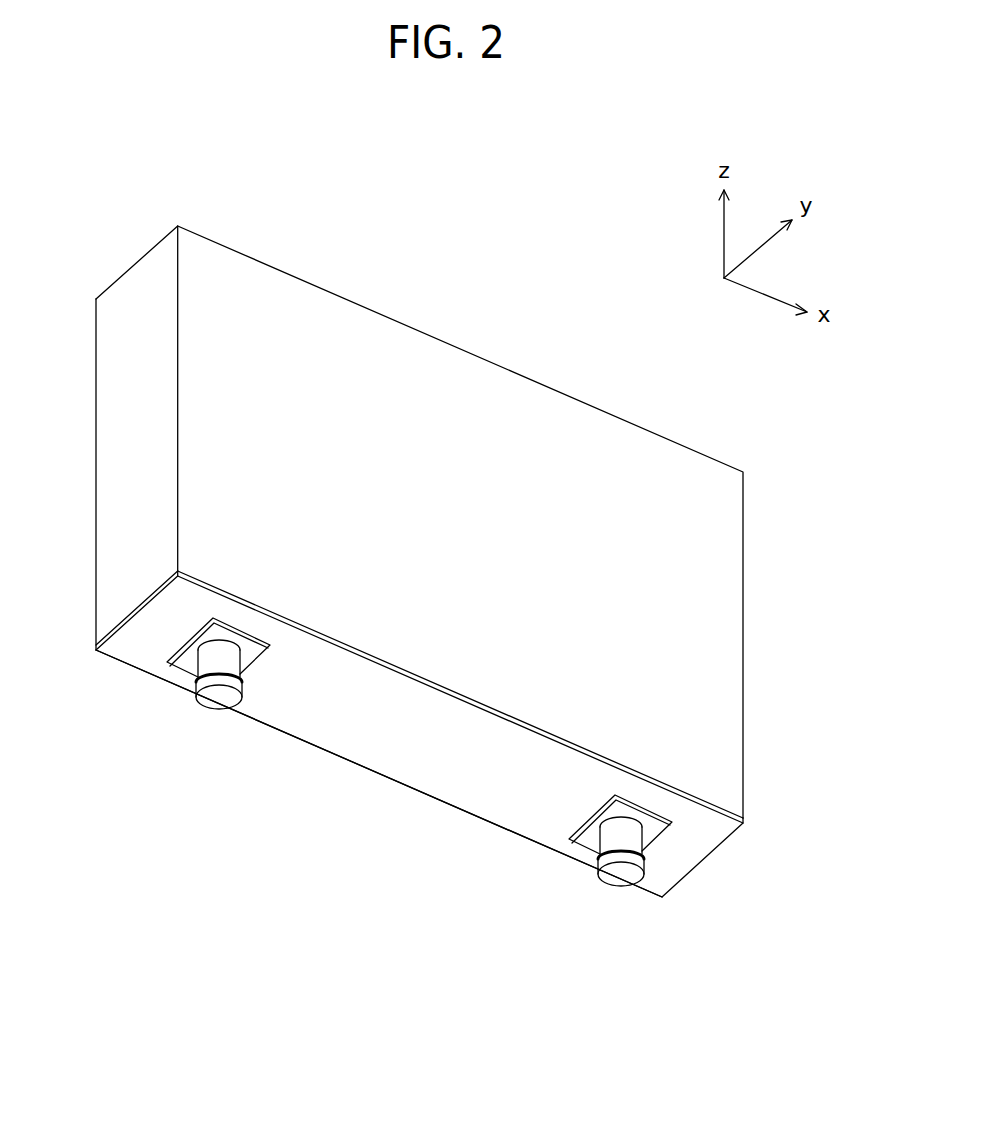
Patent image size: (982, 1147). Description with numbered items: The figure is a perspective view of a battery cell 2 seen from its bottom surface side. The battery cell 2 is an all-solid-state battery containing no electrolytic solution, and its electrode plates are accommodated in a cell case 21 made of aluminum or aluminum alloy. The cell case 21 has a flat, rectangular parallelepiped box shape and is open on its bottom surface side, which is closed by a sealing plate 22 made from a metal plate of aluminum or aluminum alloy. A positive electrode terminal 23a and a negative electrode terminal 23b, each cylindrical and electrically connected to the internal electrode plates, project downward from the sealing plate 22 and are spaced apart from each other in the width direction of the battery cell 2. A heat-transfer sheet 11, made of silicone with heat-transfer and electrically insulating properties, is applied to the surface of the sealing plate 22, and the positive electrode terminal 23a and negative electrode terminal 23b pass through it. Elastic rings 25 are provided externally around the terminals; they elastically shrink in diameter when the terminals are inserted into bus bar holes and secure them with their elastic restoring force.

The battery cell 2 is at (425, 228).
The heat-transfer sheet 11 is at (445, 785).
The cell case 21 is at (728, 612).
The sealing plate 22 is at (350, 730).
The positive electrode terminal 23a is at (212, 698).
The negative electrode terminal 23b is at (618, 877).
The elastic ring 25 is at (197, 683).